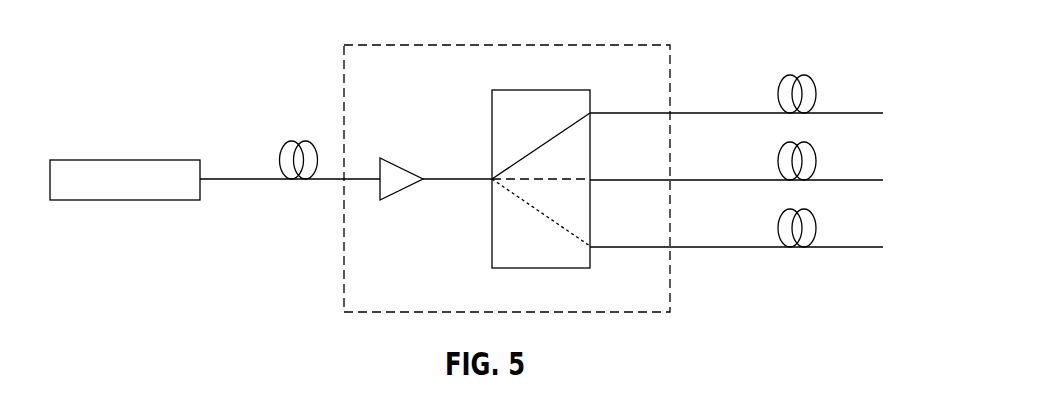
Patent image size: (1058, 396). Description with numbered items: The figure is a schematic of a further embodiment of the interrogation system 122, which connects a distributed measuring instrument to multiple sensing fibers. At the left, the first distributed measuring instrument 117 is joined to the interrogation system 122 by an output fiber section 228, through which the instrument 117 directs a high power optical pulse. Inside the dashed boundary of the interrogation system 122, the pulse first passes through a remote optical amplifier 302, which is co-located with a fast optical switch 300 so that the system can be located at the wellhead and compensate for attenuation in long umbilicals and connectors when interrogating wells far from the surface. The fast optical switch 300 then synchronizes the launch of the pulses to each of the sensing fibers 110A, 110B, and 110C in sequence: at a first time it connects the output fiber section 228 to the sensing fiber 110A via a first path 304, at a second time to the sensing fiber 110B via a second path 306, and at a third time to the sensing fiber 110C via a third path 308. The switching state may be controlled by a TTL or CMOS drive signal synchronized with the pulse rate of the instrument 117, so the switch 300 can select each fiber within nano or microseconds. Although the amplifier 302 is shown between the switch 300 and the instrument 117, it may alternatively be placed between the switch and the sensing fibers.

The first distributed measuring instrument 117 is at (146, 192).
The output fiber section 228 is at (233, 179).
The interrogation system 122 is at (597, 44).
The remote optical amplifier 302 is at (400, 168).
The fast optical switch 300 is at (590, 212).
The first path 304 is at (523, 153).
The second path 306 is at (572, 178).
The third path 308 is at (523, 200).
The sensing fiber 110A is at (868, 113).
The sensing fiber 110B is at (868, 180).
The sensing fiber 110C is at (868, 247).